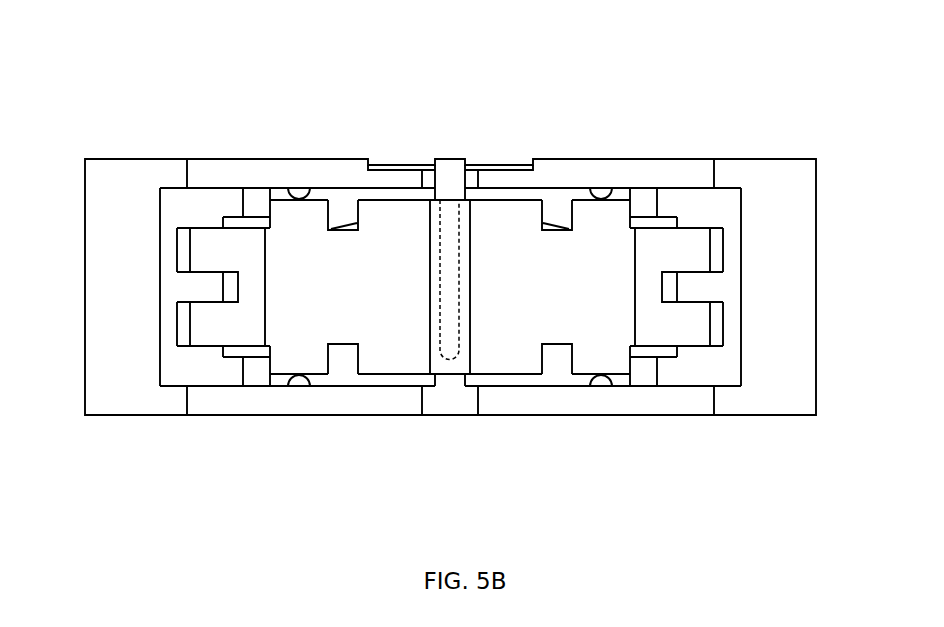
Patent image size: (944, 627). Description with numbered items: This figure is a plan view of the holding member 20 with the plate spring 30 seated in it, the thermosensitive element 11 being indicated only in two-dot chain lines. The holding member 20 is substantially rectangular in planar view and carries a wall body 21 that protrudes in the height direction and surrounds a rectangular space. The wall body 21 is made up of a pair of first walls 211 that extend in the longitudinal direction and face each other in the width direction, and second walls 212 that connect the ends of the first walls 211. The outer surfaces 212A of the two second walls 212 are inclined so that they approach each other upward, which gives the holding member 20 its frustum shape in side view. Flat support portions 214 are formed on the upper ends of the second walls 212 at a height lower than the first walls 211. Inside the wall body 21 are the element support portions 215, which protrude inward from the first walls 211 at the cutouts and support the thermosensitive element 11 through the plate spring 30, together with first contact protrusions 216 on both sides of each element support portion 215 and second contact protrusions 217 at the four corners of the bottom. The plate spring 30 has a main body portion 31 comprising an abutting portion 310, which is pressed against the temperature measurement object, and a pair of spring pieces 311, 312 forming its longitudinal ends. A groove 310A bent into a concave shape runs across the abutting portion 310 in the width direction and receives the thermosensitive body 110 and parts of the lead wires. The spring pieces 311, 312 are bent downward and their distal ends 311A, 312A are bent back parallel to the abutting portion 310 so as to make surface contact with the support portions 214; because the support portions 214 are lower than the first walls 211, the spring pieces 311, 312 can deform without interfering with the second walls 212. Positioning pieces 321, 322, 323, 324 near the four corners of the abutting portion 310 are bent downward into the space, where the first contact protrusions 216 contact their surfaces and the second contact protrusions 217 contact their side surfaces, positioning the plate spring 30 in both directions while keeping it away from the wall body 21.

The holding member 20 is at (752, 150).
The wall body 21 is at (655, 150).
The first wall 211 is at (538, 158).
The second wall 212 is at (233, 216).
The outer surface 212A is at (108, 180).
The support portion 214 is at (173, 203).
The element support portion 215 is at (478, 186).
The first contact protrusion 216 is at (298, 201).
The second contact protrusion 217 is at (280, 187).
The plate spring 30 is at (501, 186).
The main body portion 31 is at (535, 396).
The abutting portion 310 is at (377, 210).
The groove 310A is at (446, 198).
The spring piece 311 is at (693, 230).
The distal end 311A is at (725, 321).
The spring piece 312 is at (199, 226).
The distal end 312A is at (177, 250).
The positioning piece 321 is at (575, 187).
The positioning piece 322 is at (327, 198).
The positioning piece 323 is at (583, 388).
The positioning piece 324 is at (323, 388).
The thermosensitive element 11 is at (421, 273).
The thermosensitive body 110 is at (473, 302).